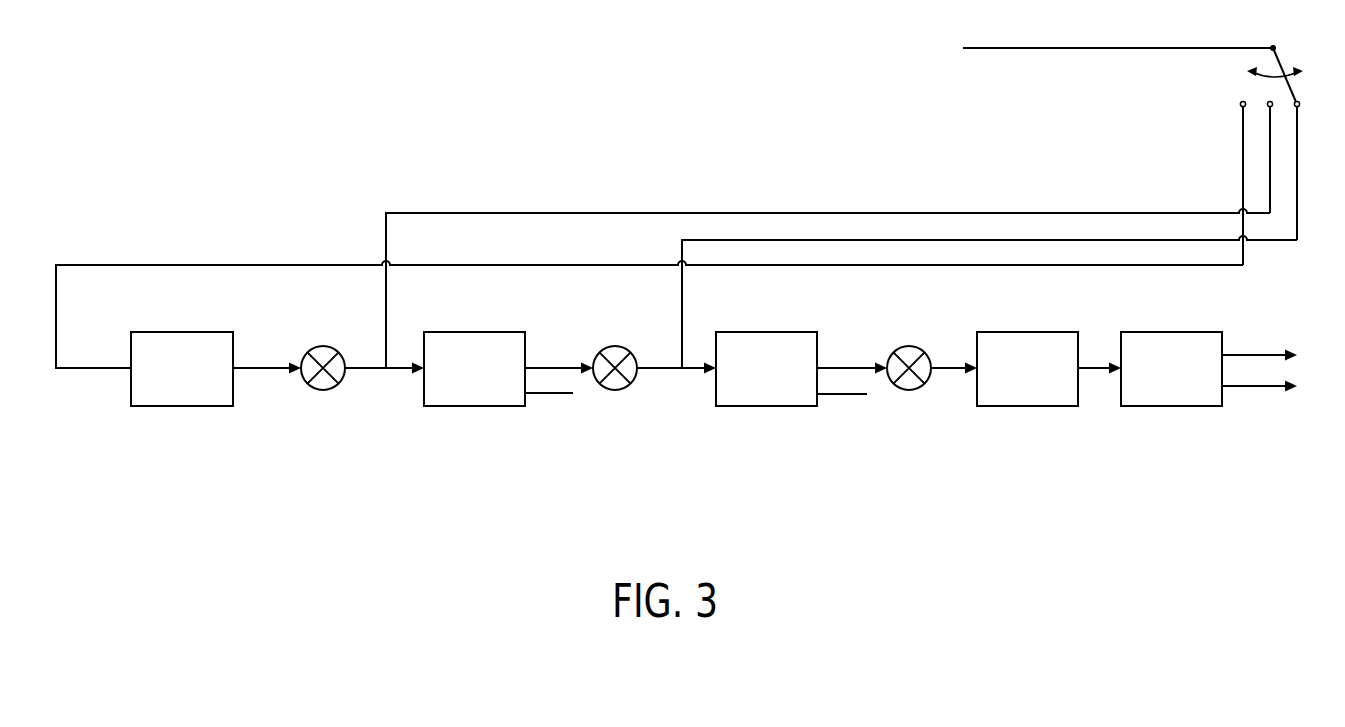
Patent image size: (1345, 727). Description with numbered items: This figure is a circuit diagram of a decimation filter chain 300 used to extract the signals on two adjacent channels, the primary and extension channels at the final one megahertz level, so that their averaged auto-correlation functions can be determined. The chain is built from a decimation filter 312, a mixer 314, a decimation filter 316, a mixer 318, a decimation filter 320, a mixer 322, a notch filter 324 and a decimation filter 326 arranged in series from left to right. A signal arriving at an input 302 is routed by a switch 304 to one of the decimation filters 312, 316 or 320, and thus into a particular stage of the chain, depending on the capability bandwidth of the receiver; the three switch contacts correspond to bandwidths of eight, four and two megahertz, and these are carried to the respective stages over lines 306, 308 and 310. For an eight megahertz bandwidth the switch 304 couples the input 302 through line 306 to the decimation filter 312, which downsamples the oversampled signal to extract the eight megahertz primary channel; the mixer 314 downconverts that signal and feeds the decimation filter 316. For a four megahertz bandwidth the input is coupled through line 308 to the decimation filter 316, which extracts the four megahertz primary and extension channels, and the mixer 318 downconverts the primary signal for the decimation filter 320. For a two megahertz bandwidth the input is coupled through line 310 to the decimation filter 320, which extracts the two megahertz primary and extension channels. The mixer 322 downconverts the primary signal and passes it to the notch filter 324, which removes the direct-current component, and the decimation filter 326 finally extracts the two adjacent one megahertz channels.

The decimation filter chain 300 is at (475, 60).
The input 302 is at (1118, 37).
The switch 304 is at (1277, 51).
The 8 MHz CBW signal line 306 is at (447, 265).
The 4 MHz CBW signal line 308 is at (503, 213).
The 2 MHz CBW signal line 310 is at (690, 240).
The decimation filter 312 is at (218, 390).
The mixer 314 is at (324, 346).
The decimation filter 316 is at (510, 390).
The mixer 318 is at (616, 346).
The decimation filter 320 is at (802, 390).
The mixer 322 is at (910, 346).
The notch filter 324 is at (1014, 391).
The decimation filter 326 is at (1207, 390).